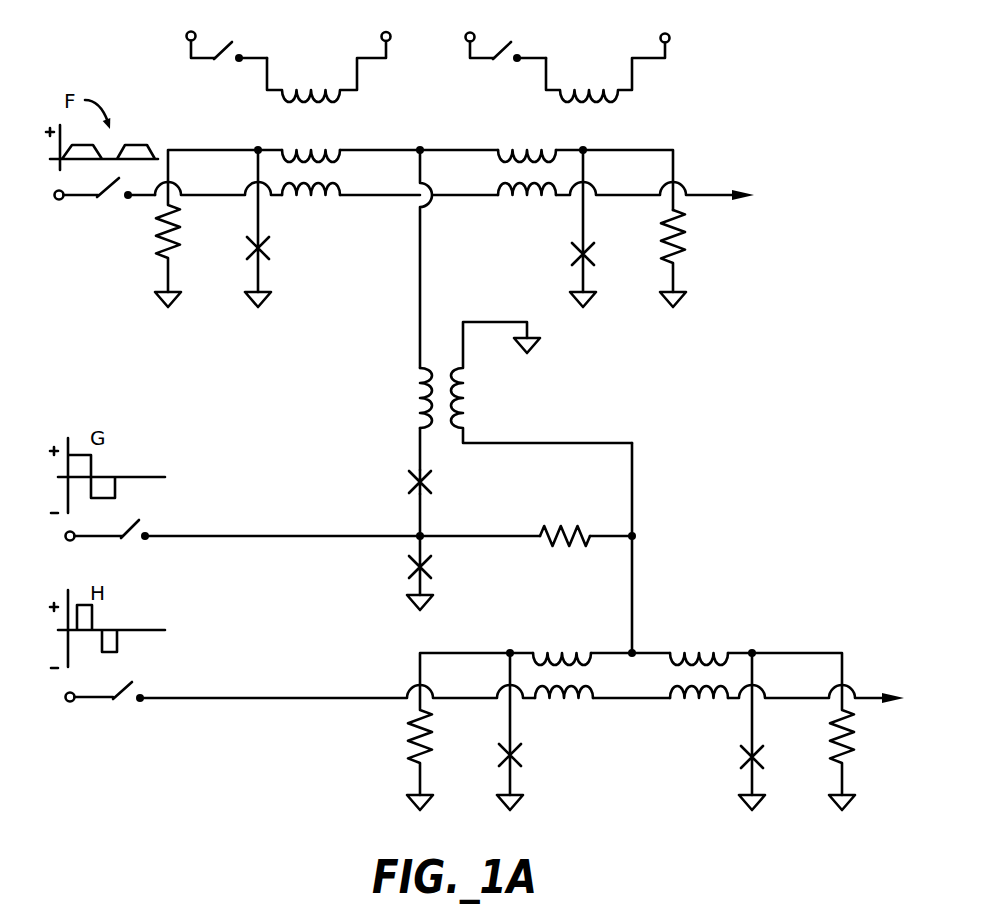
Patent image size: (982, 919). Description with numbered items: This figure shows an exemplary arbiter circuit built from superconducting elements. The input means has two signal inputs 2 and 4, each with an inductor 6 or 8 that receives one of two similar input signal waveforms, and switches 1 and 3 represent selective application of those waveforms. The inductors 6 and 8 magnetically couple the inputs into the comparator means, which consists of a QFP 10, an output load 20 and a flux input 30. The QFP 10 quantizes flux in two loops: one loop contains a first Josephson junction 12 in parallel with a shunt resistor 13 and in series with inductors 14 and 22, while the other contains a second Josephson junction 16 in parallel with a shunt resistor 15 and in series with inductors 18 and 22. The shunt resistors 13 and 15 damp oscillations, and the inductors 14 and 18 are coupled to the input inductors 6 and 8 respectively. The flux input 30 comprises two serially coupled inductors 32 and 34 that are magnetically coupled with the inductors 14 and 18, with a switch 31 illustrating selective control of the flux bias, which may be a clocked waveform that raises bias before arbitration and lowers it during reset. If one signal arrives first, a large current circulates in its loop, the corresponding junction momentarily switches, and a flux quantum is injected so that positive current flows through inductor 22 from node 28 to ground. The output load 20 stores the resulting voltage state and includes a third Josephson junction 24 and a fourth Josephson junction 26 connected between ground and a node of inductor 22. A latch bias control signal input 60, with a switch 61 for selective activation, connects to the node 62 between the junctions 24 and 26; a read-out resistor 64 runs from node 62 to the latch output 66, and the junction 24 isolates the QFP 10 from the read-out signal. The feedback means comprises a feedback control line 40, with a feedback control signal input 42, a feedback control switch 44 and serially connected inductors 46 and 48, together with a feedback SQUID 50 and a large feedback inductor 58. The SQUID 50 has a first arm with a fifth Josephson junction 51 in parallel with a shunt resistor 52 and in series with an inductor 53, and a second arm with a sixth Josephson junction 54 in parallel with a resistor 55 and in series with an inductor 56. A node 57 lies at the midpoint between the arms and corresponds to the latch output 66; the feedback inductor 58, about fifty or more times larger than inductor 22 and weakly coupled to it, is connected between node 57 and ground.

The switch 1 is at (235, 63).
The signal input 2 is at (188, 31).
The switch 3 is at (515, 64).
The signal input 4 is at (467, 28).
The inductor 6 is at (282, 108).
The inductor 8 is at (562, 111).
The QFP 10 is at (673, 163).
The first Josephson junction 12 is at (265, 243).
The shunt resistor 13 is at (155, 239).
The inductor 14 is at (312, 154).
The shunt resistor 15 is at (684, 242).
The second Josephson junction 16 is at (575, 252).
The inductor 18 is at (547, 158).
The output load 20 is at (440, 500).
The inductor 22 is at (422, 392).
The third Josephson junction 24 is at (414, 481).
The fourth Josephson junction 26 is at (414, 568).
The node 28 is at (420, 147).
The flux input 30 is at (88, 200).
The switch 31 is at (122, 213).
The inductor 32 is at (328, 189).
The inductor 34 is at (515, 191).
The feedback control line 40 is at (311, 702).
The feedback control signal input 42 is at (73, 692).
The feedback control switch 44 is at (137, 702).
The inductor 46 is at (577, 699).
The inductor 48 is at (694, 699).
The feedback SQUID 50 is at (652, 772).
The fifth Josephson junction 51 is at (506, 750).
The shunt resistor 52 is at (410, 741).
The inductor 53 is at (553, 655).
The sixth Josephson junction 54 is at (749, 750).
The resistor 55 is at (835, 737).
The inductor 56 is at (703, 656).
The node 57 is at (634, 650).
The feedback inductor 58 is at (464, 395).
The latch bias control signal input 60 is at (248, 539).
The switch 61 is at (142, 540).
The node 62 is at (418, 533).
The read-out resistor 64 is at (551, 532).
The latch output 66 is at (636, 535).